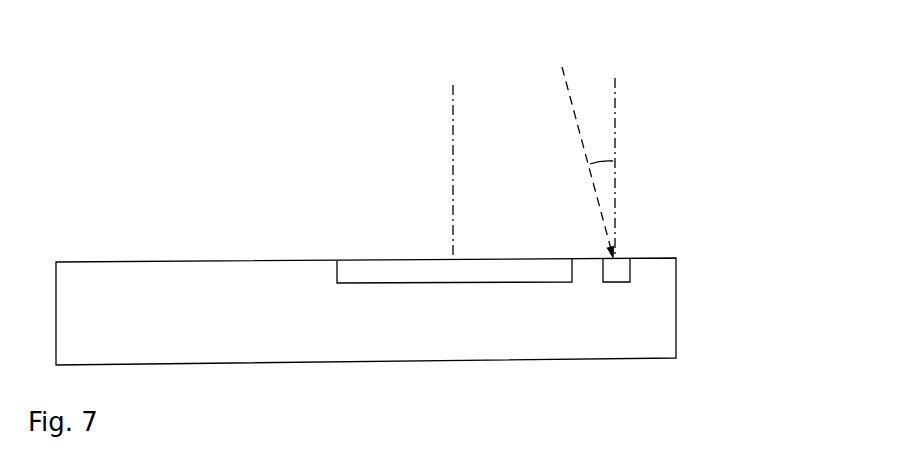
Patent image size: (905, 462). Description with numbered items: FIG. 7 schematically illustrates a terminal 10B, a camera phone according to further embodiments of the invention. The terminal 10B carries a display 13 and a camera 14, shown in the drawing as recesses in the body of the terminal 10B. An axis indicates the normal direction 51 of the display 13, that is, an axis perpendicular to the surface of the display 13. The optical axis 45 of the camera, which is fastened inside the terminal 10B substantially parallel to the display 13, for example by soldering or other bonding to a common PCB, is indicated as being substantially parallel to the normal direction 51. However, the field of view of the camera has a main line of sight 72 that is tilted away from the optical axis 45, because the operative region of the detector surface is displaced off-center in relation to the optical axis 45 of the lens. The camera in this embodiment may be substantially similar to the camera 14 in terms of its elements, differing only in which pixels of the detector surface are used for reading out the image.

The terminal 10B is at (676, 327).
The display 13 is at (437, 276).
The camera 14 is at (622, 277).
The normal direction 51 is at (455, 167).
The optical axis 45 is at (617, 108).
The main line of sight 72 is at (568, 92).